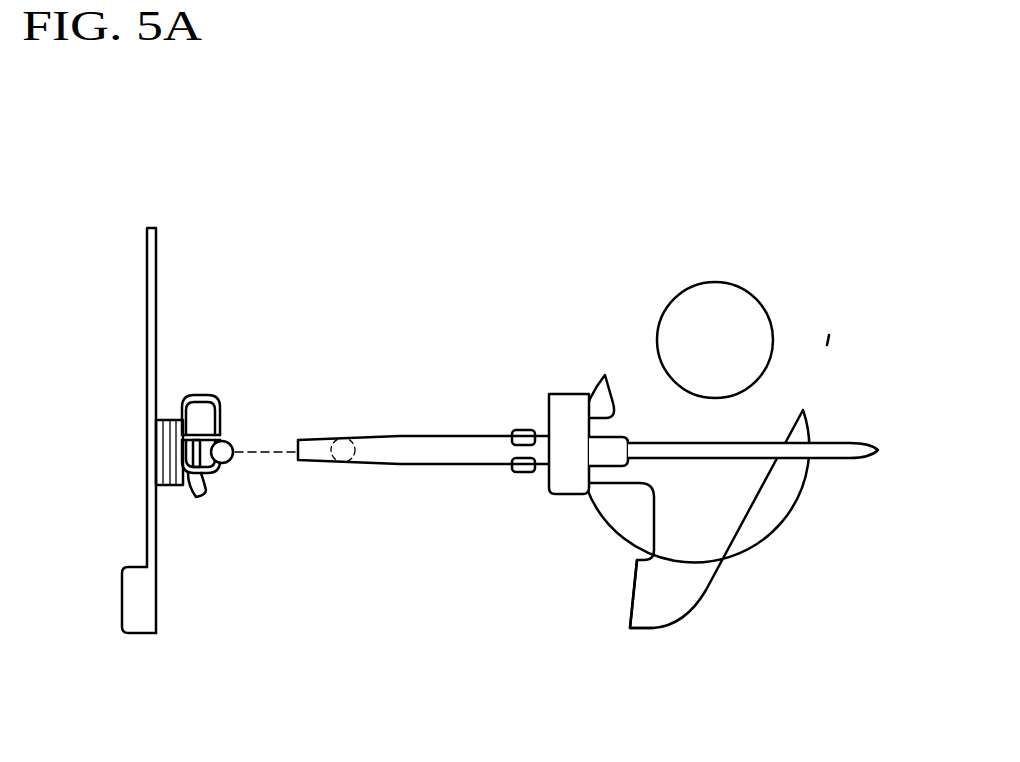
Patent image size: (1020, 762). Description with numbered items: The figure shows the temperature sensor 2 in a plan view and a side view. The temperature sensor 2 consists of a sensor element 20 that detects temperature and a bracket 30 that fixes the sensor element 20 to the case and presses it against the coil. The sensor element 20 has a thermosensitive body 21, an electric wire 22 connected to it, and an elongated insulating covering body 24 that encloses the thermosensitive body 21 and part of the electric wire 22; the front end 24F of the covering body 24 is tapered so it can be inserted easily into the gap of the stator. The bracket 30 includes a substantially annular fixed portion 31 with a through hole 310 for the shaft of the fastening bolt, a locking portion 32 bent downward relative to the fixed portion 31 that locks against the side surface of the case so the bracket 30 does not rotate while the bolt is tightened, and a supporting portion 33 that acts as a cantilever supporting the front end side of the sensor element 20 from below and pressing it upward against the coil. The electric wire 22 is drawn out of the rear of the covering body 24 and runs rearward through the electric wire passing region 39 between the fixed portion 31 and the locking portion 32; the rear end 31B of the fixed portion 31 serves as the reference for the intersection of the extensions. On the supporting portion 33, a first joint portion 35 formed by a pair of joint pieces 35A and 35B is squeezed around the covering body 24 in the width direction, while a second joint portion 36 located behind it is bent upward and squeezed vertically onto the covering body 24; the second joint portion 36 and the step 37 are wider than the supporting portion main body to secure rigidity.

The temperature sensor 2 is at (572, 190).
The sensor element 20 is at (232, 437).
The thermosensitive body 21 is at (343, 438).
The electric wire 22 is at (813, 443).
The covering body 24 is at (432, 436).
The front end 24F is at (297, 440).
The bracket 30 is at (137, 168).
The fixed portion 31 is at (157, 258).
The rear end 31B is at (832, 338).
The through hole 310 is at (762, 354).
The locking portion 32 is at (148, 603).
The supporting portion 33 is at (193, 455).
The first joint portion 35 is at (443, 542).
The joint piece 35A is at (213, 492).
The joint piece 35B is at (198, 425).
The second joint portion 36 is at (197, 396).
The step 37 is at (163, 420).
The electric wire passing region 39 is at (632, 437).